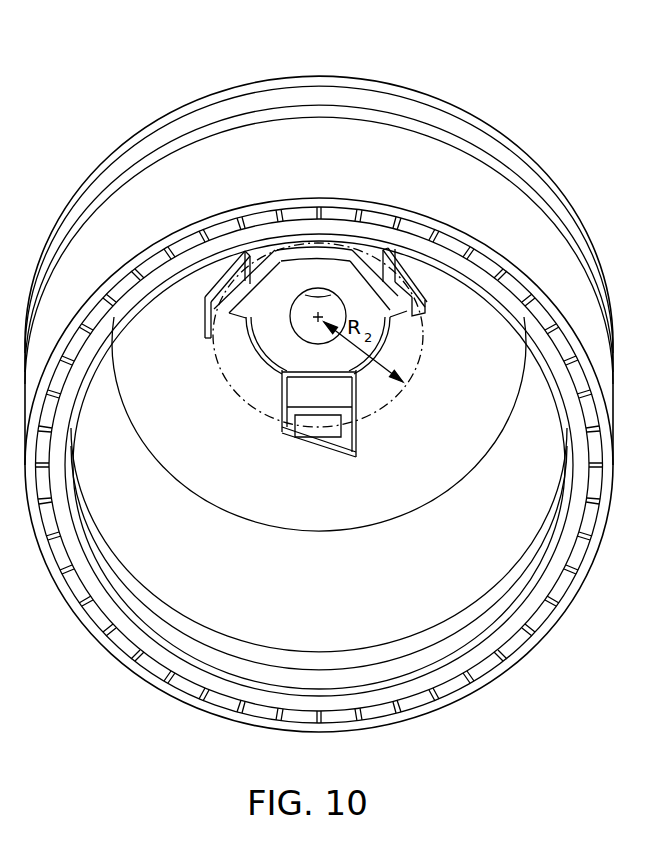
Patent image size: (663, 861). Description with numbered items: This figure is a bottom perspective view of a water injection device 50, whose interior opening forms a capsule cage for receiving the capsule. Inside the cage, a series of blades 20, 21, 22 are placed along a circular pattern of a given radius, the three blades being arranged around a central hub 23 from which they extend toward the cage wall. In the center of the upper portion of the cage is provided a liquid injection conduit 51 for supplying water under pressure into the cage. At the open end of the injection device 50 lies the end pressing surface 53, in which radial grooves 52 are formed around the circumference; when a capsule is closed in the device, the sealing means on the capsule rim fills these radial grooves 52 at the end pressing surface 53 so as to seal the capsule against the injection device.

The blade 20 is at (209, 336).
The blade 21 is at (335, 430).
The blade 22 is at (428, 305).
The hub ring 23 is at (283, 343).
The cylindrical housing 50 is at (528, 152).
The liquid injection conduit 51 is at (305, 307).
The radial grooves 52 is at (200, 691).
The end pressing surface 53 is at (528, 655).